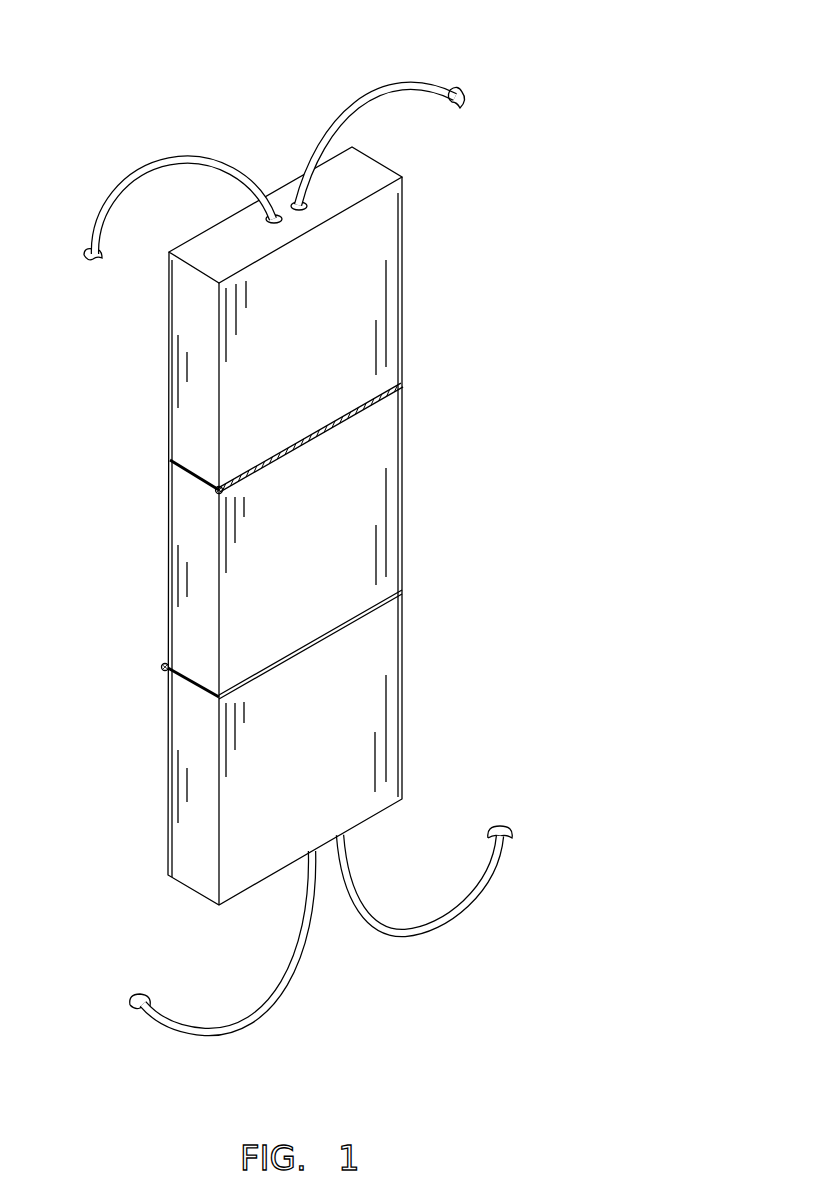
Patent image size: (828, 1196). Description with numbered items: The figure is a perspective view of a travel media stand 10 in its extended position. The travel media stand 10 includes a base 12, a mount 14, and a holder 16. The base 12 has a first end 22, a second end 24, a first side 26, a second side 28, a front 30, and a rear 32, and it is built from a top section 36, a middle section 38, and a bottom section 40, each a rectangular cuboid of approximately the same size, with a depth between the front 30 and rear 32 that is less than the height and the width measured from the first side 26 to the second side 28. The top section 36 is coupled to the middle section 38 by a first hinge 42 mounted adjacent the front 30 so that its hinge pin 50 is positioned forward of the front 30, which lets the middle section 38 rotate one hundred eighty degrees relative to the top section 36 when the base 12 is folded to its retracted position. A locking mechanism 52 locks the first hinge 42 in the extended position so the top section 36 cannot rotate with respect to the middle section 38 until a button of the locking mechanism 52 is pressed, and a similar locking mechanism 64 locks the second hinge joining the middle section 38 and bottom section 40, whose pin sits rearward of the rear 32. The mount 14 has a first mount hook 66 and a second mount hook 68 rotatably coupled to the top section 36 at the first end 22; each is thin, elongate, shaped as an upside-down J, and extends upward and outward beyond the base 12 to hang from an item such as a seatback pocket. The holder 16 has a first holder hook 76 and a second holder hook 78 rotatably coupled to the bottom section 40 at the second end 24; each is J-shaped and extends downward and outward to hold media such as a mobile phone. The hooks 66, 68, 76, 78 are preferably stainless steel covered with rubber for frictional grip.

The travel media stand 10 is at (532, 158).
The base 12 is at (402, 520).
The mount 14 is at (338, 107).
The holder 16 is at (449, 936).
The first end 22 is at (206, 260).
The second end 24 is at (383, 812).
The first side 26 is at (193, 623).
The second side 28 is at (402, 563).
The front 30 is at (242, 435).
The rear 32 is at (168, 403).
The top section 36 is at (392, 283).
The middle section 38 is at (382, 445).
The bottom section 40 is at (393, 693).
The first hinge 42 is at (340, 417).
The hinge pin 50 is at (283, 450).
The locking mechanism 52 is at (218, 493).
The locking mechanism 64 is at (162, 670).
The first mount hook 66 is at (115, 203).
The second mount hook 68 is at (447, 88).
The first holder hook 76 is at (225, 1025).
The second holder hook 78 is at (487, 903).